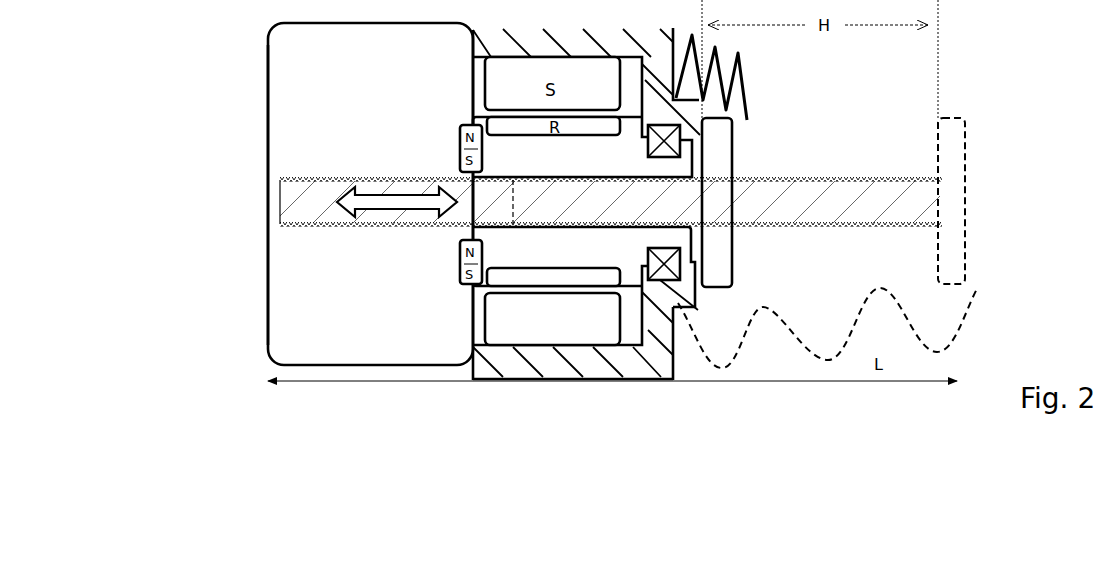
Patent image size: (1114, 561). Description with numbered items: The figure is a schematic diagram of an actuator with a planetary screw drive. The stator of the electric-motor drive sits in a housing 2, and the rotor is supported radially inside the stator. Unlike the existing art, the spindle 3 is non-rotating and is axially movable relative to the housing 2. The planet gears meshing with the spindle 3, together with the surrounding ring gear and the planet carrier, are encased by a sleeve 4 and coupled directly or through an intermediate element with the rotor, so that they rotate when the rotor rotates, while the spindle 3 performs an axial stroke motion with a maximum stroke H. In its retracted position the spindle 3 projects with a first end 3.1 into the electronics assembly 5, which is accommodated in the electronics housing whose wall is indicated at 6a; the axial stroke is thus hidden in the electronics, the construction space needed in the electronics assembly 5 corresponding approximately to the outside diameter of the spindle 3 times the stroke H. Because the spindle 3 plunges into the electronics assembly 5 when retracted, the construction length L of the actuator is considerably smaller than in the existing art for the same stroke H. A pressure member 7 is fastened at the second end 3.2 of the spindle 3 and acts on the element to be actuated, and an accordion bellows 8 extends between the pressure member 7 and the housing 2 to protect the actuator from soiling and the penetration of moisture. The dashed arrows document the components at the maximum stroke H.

The housing 2 is at (676, 107).
The spindle 3 is at (627, 196).
The first end 3.1 is at (281, 200).
The second end 3.2 is at (695, 213).
The sleeve 4 is at (695, 161).
The electronics assembly 5 is at (370, 201).
The housing wall 6a is at (263, 136).
The pressure member 7 is at (730, 258).
The accordion bellows 8 is at (748, 67).